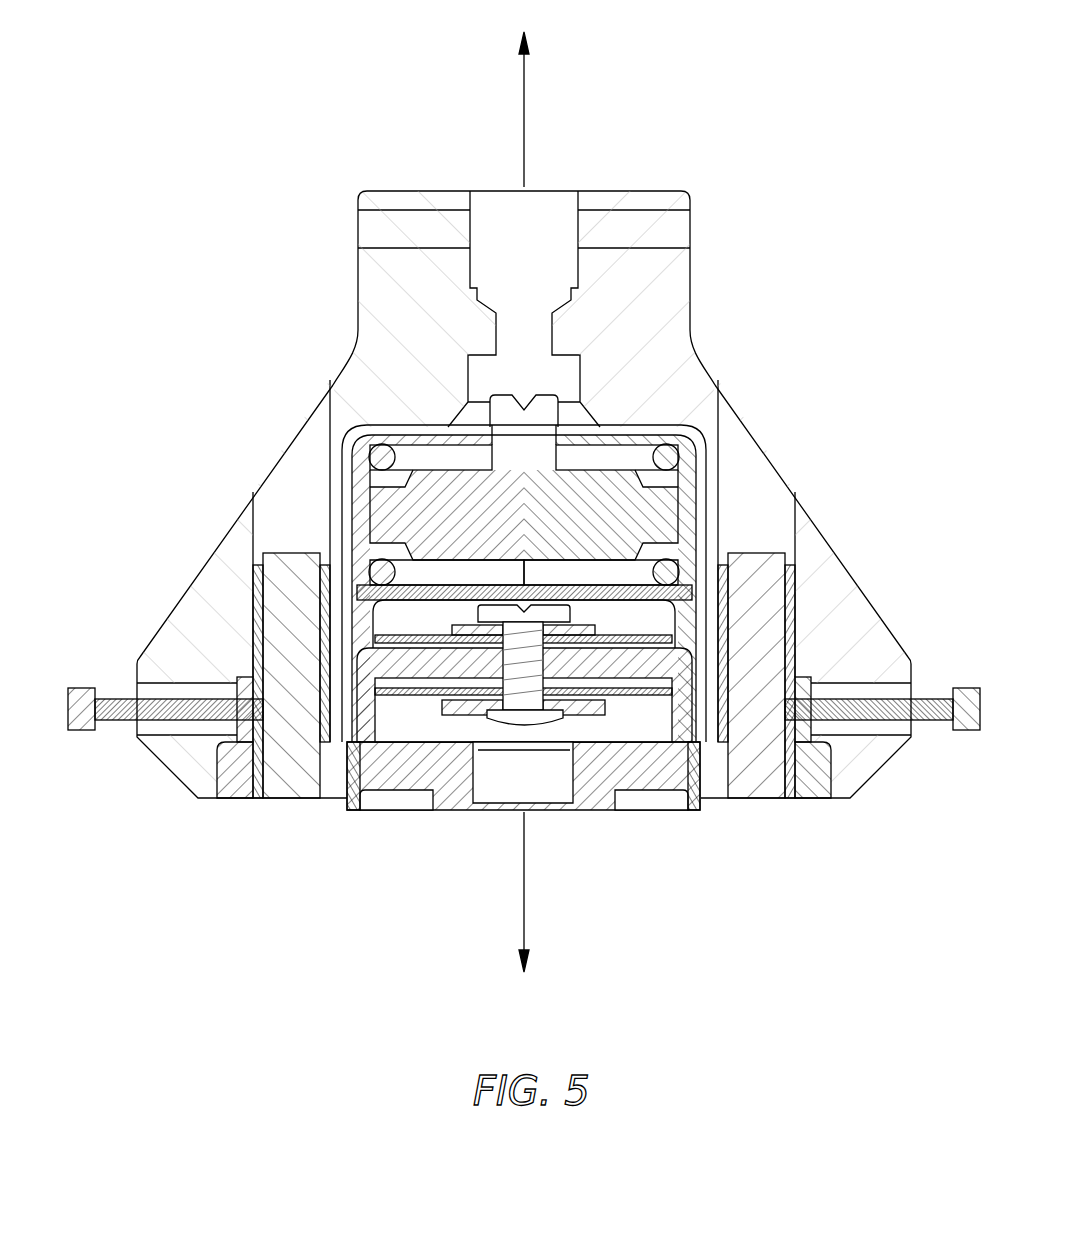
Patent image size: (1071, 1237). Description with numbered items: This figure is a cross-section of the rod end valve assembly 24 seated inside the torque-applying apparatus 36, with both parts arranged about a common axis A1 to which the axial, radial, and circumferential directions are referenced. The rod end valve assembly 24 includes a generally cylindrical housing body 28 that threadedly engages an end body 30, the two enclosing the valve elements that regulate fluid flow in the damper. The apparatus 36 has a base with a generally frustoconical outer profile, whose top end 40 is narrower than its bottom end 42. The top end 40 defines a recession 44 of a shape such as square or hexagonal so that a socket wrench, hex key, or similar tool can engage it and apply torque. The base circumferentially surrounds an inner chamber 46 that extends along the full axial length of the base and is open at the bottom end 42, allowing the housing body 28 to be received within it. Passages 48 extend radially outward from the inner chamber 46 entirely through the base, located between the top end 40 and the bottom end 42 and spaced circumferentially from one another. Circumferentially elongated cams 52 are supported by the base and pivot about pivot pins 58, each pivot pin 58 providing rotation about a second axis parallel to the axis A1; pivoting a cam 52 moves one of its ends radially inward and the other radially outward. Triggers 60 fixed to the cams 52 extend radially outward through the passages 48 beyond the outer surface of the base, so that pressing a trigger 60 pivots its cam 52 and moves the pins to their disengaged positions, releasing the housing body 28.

The axis A1 is at (525, 103).
The rod end valve assembly 24 is at (370, 860).
The housing body 28 is at (695, 812).
The end body 30 is at (595, 812).
The apparatus 36 is at (195, 437).
The top end 40 is at (690, 270).
The bottom end 42 is at (865, 615).
The recession 44 is at (497, 215).
The inner chamber 46 is at (345, 457).
The passages 48 is at (157, 695).
The cams 52 is at (328, 727).
The pivot pins 58 is at (755, 555).
The triggers 60 is at (110, 722).